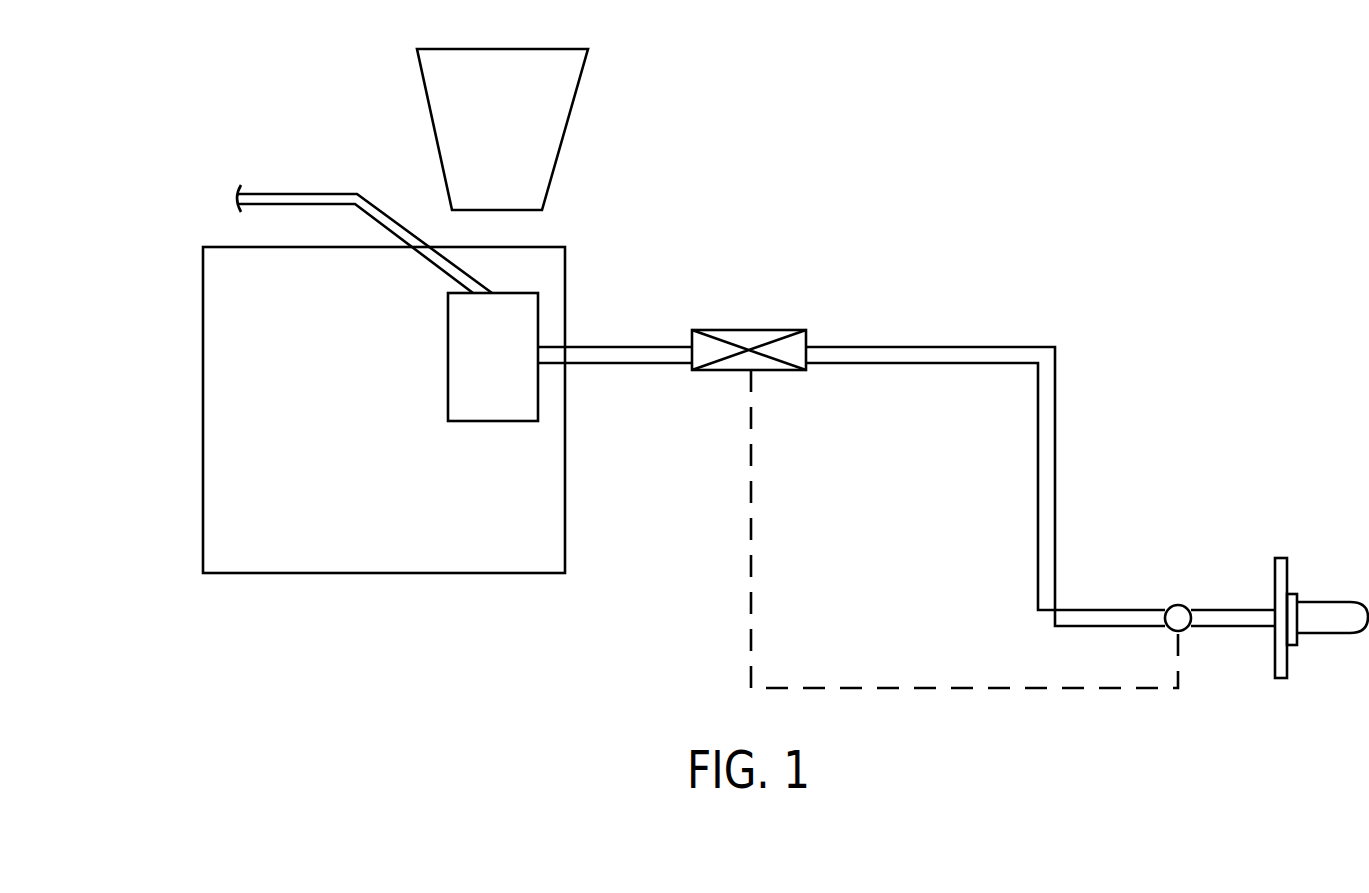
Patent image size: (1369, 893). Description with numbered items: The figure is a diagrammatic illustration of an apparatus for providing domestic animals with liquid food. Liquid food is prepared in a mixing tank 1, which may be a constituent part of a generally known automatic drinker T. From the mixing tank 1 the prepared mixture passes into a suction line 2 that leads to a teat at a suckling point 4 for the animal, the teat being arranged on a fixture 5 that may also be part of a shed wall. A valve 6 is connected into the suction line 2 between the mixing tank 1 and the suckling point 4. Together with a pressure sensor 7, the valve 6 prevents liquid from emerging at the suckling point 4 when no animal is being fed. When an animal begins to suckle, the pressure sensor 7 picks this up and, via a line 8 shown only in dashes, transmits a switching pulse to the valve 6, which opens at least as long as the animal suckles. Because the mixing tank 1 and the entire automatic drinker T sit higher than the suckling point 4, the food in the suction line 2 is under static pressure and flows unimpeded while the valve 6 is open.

The automatic drinker T is at (140, 131).
The mixing tank 1 is at (493, 325).
The suction line 2 is at (938, 335).
The suckling point 4 is at (1308, 540).
The fixture 5 is at (1282, 658).
The valve 6 is at (734, 330).
The pressure sensor 7 is at (1175, 615).
The line 8 is at (942, 688).